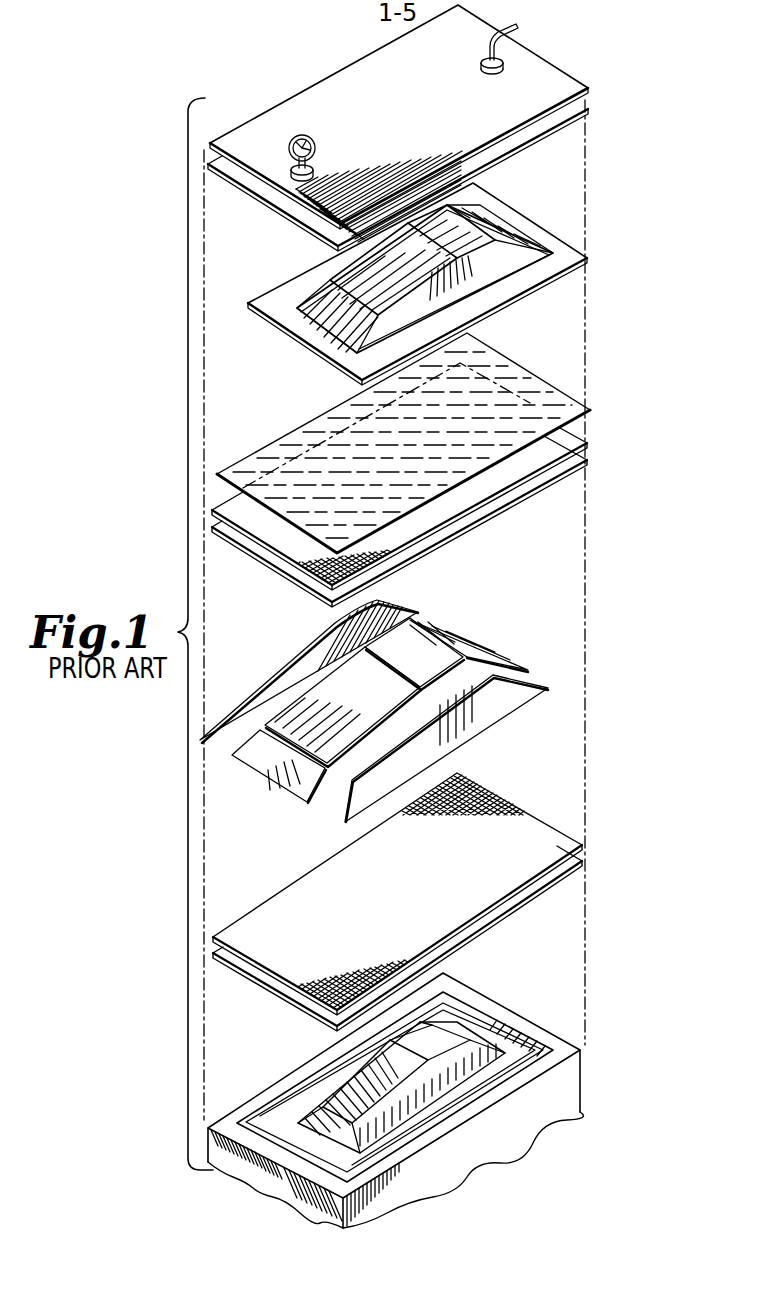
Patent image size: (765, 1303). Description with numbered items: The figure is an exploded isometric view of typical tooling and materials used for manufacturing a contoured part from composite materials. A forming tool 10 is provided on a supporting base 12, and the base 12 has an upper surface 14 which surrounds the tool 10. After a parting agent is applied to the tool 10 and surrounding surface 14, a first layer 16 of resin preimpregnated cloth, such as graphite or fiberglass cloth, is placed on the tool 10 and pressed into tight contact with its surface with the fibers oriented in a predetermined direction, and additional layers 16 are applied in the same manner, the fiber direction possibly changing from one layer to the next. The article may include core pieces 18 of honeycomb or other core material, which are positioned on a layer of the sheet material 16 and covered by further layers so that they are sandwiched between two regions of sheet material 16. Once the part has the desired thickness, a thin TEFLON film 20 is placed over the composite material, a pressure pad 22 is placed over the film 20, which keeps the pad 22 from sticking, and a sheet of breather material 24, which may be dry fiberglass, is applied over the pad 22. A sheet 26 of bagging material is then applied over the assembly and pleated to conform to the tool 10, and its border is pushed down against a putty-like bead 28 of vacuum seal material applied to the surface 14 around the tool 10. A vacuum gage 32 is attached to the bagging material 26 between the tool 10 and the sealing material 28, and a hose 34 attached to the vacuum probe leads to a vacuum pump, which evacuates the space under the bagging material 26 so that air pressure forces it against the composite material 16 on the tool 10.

The forming tool 10 is at (467, 1058).
The supporting base 12 is at (562, 1097).
The upper surface 14 is at (527, 1050).
The layer of resin preimpregnated cloth 16 is at (467, 498).
The core pieces 18 is at (307, 665).
The TEFLON film 20 is at (260, 457).
The pressure pad 22 is at (330, 348).
The sheet of breather material 24 is at (263, 190).
The sheet of bagging material 26 is at (238, 127).
The bead of vacuum seal material 28 is at (287, 1088).
The vacuum gage 32 is at (495, 50).
The hose 34 is at (513, 24).